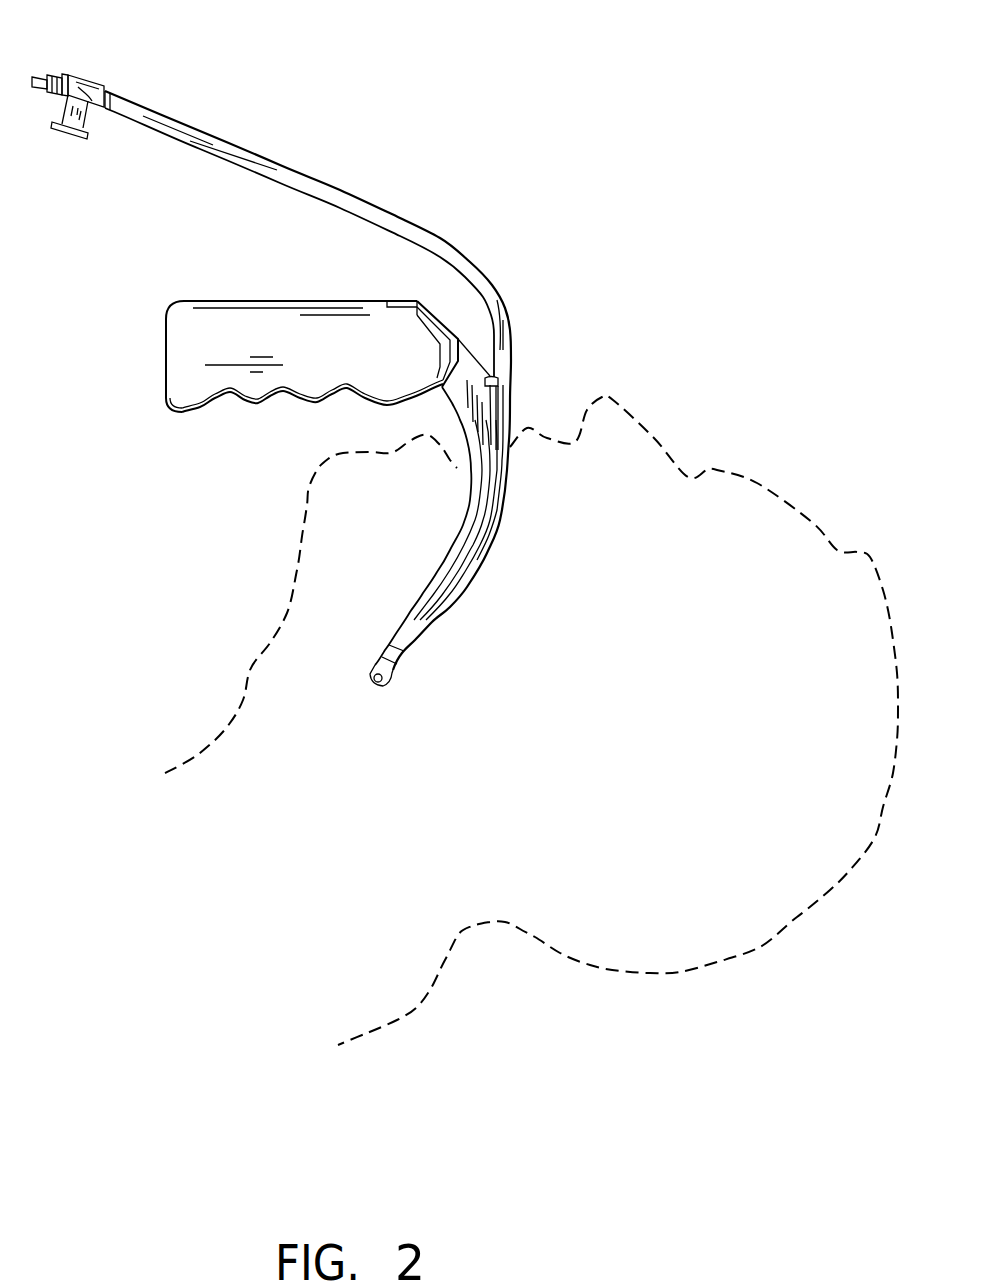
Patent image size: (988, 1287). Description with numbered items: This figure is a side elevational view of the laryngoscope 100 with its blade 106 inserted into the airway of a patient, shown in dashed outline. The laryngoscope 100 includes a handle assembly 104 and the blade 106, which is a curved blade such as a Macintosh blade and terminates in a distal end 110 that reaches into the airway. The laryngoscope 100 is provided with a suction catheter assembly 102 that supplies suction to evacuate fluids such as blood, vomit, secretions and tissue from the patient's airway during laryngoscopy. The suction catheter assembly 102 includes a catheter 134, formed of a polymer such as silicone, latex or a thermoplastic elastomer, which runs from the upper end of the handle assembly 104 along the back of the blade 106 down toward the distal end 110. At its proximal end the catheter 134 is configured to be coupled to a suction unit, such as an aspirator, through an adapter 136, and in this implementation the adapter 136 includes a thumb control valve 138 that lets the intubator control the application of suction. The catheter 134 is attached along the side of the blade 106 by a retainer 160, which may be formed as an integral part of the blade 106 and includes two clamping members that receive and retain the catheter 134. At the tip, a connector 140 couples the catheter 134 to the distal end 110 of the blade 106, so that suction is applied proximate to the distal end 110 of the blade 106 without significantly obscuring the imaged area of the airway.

The laryngoscope 100 is at (513, 283).
The suction catheter assembly 102 is at (367, 200).
The handle assembly 104 is at (315, 299).
The blade 106 is at (513, 418).
The distal end 110 is at (393, 678).
The catheter 134 is at (509, 318).
The adapter 136 is at (95, 80).
The thumb control valve 138 is at (77, 140).
The connector 140 is at (369, 676).
The retainer 160 is at (490, 535).